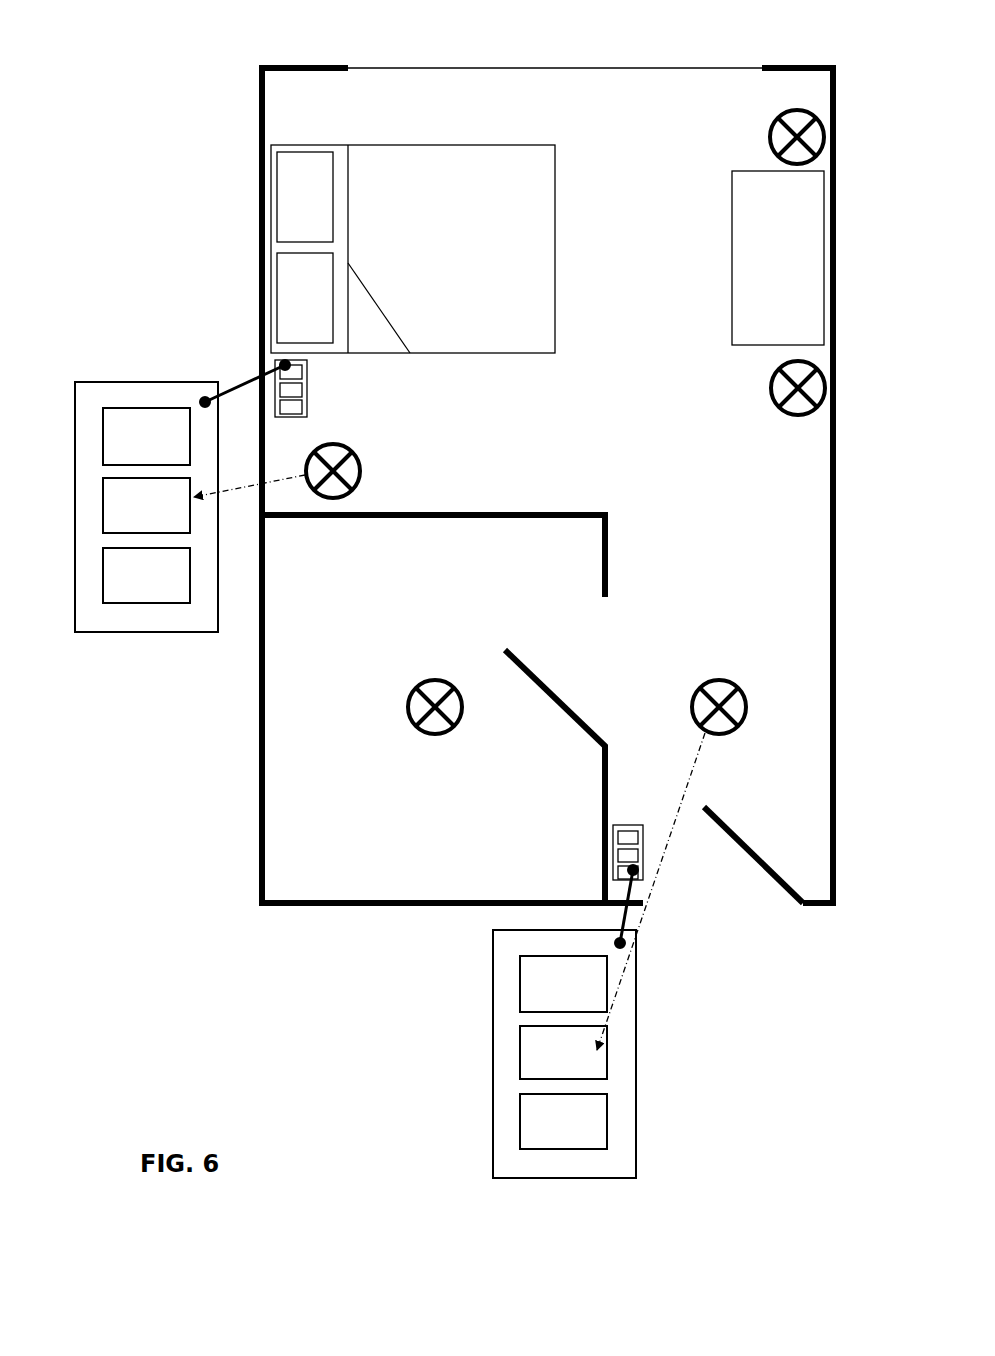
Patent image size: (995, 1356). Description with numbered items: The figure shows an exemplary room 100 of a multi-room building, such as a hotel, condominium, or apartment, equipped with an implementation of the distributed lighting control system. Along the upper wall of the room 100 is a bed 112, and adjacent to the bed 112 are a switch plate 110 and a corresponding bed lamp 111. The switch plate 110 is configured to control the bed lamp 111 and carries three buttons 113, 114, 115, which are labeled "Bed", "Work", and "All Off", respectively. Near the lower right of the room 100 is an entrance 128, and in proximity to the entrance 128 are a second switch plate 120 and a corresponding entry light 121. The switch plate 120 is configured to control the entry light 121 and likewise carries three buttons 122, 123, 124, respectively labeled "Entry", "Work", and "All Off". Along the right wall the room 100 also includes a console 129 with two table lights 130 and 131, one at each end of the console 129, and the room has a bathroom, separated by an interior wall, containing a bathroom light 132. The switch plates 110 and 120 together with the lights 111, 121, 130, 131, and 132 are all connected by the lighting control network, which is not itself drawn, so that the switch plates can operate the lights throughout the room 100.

The room 100 is at (302, 78).
The switch plate 110 is at (120, 524).
The bed lamp 111 is at (352, 465).
The bed 112 is at (477, 188).
The button 113 is at (145, 420).
The button 114 is at (118, 518).
The button 115 is at (145, 595).
The switch plate 120 is at (520, 1054).
The entry light 121 is at (738, 703).
The button 122 is at (537, 1000).
The button 123 is at (535, 1063).
The button 124 is at (537, 1118).
The entrance 128 is at (735, 892).
The console 129 is at (763, 256).
The table light 130 is at (818, 132).
The table light 131 is at (818, 385).
The bathroom light 132 is at (452, 702).